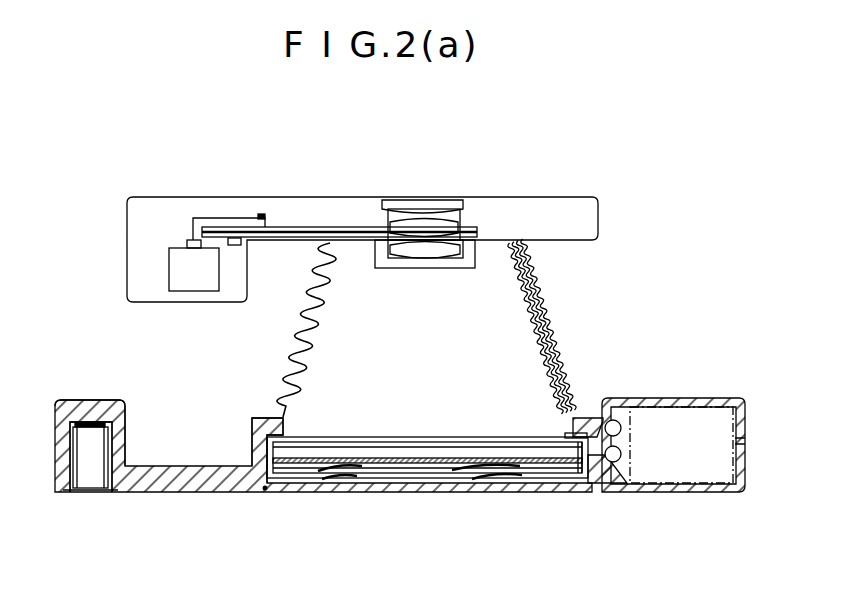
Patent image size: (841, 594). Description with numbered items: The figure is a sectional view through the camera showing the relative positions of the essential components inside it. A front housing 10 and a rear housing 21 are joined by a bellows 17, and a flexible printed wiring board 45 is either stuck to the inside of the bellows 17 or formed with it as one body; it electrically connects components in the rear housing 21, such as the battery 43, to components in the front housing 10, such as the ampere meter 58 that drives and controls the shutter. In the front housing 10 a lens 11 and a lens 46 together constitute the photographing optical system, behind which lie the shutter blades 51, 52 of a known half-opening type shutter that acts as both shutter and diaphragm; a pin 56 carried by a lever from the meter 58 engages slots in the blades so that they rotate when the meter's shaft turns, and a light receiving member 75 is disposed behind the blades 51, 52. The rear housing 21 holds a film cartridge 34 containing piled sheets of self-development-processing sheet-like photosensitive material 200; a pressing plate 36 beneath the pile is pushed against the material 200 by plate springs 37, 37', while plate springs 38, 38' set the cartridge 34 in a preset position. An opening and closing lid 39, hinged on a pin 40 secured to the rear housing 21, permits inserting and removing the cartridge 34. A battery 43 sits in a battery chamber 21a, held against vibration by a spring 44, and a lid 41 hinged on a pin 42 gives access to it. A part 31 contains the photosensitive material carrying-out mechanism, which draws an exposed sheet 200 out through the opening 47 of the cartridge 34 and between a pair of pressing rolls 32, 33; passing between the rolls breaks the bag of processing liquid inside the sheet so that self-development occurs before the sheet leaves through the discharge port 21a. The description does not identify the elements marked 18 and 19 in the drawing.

The front housing 10 is at (523, 222).
The lens 11 is at (427, 205).
The lens 46 is at (466, 235).
The shutter blade 52 is at (290, 227).
The shutter blade 51 is at (290, 238).
The pin 56 is at (258, 240).
The light receiving member 75 is at (234, 246).
The ampere meter 58 is at (193, 282).
The bellows 17 is at (278, 371).
The flexible printed wiring board 45 is at (562, 320).
The base 18 is at (190, 452).
The base left block 19 is at (56, 405).
The pin 40 is at (264, 493).
The spring 44 is at (86, 422).
The battery chamber 21a is at (104, 421).
The battery 43 is at (82, 478).
The lid 41 is at (93, 492).
The pin 42 is at (110, 490).
The sheet-like photosensitive material 200 is at (545, 448).
The opening and closing lid 39 is at (438, 480).
The plate spring 38 is at (340, 506).
The plate spring 37 is at (358, 505).
The plate spring 37' is at (486, 506).
The plate spring 38' is at (501, 510).
The pressing plate 36 is at (563, 471).
The film cartridge 34 is at (583, 485).
The opening 47 is at (598, 441).
The pressing roll 32 is at (608, 421).
The pressing roll 33 is at (618, 460).
The rear housing 21 is at (679, 398).
The photosensitive material carrying-out mechanism part 31 is at (714, 440).